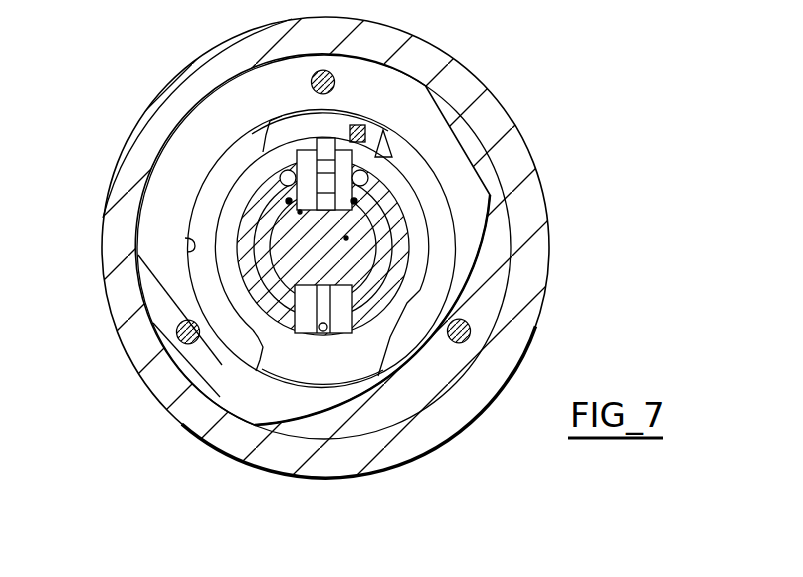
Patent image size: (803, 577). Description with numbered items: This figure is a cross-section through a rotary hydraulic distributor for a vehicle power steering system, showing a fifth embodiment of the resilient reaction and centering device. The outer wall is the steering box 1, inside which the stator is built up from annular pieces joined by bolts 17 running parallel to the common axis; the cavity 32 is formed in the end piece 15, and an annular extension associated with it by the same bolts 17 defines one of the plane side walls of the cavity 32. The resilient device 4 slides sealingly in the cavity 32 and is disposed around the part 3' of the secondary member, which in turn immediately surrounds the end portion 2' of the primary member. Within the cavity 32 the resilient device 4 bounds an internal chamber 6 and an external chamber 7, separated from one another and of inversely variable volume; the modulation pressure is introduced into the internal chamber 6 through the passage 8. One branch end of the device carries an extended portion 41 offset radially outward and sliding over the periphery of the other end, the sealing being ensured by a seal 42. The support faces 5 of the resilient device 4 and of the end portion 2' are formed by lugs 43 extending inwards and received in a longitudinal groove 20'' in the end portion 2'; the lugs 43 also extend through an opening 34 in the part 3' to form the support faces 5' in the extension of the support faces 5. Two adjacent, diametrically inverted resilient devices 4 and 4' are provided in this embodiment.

The steering box 1 is at (494, 88).
The bolts 17 is at (362, 54).
The annular end piece 15 is at (198, 384).
The cavity 32 is at (185, 238).
The external chamber 7 is at (226, 193).
The resilient device 4 is at (324, 266).
The resilient device 4' is at (420, 146).
The part of the secondary member 3' is at (364, 247).
The end portion of the primary member 2' is at (323, 247).
The longitudinal groove 20'' is at (323, 247).
The internal chamber 6 is at (250, 272).
The seal 42 is at (375, 117).
The extended portion 41 is at (355, 123).
The opening 34 is at (305, 172).
The support faces 5' is at (318, 157).
The support faces 5 is at (321, 181).
The lugs 43 is at (300, 214).
The passage 8 is at (323, 334).